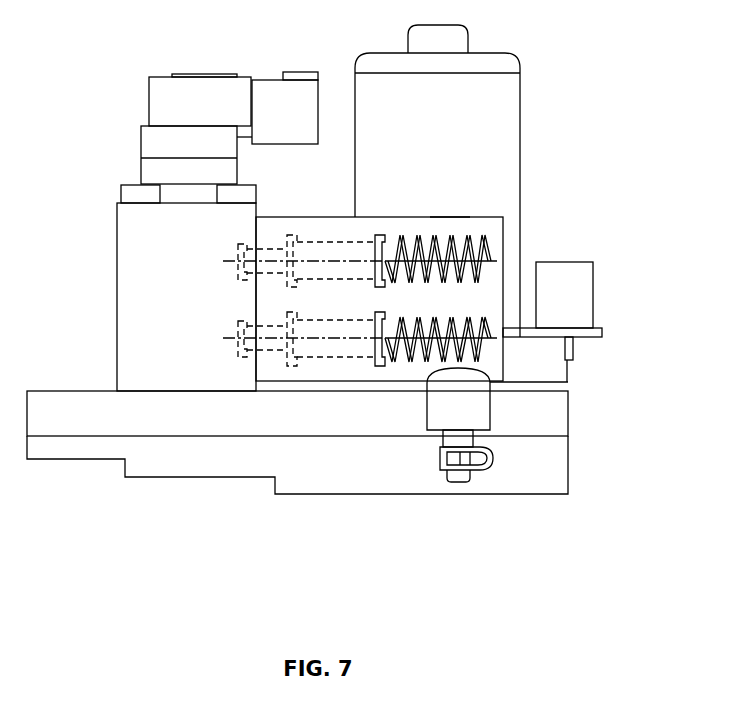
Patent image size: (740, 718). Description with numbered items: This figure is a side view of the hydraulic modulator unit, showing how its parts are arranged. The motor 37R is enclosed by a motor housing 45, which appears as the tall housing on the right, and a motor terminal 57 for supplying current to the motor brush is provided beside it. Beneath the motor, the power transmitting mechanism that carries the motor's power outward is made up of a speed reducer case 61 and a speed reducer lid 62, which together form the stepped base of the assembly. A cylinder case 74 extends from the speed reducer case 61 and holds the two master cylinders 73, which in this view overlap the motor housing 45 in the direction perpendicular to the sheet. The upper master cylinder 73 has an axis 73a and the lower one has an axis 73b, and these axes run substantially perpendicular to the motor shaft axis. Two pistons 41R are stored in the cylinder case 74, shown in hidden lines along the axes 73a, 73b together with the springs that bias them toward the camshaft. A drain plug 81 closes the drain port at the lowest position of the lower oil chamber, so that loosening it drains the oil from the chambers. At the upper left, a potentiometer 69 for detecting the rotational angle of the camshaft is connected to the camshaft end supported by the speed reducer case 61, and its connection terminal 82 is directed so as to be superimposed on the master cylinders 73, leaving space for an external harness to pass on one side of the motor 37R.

The motor 37R is at (547, 131).
The pistons 41R is at (337, 242).
The motor housing 45 is at (520, 165).
The motor terminal 57 is at (566, 272).
The speed reducer case 61 is at (557, 413).
The speed reducer lid 62 is at (557, 470).
The potentiometer 69 is at (193, 90).
The master cylinders 73 is at (509, 253).
The axis 73a is at (422, 258).
The axis 73b is at (358, 340).
The cylinder case 74 is at (453, 215).
The drain plug 81 is at (440, 458).
The connection terminal 82 is at (278, 95).